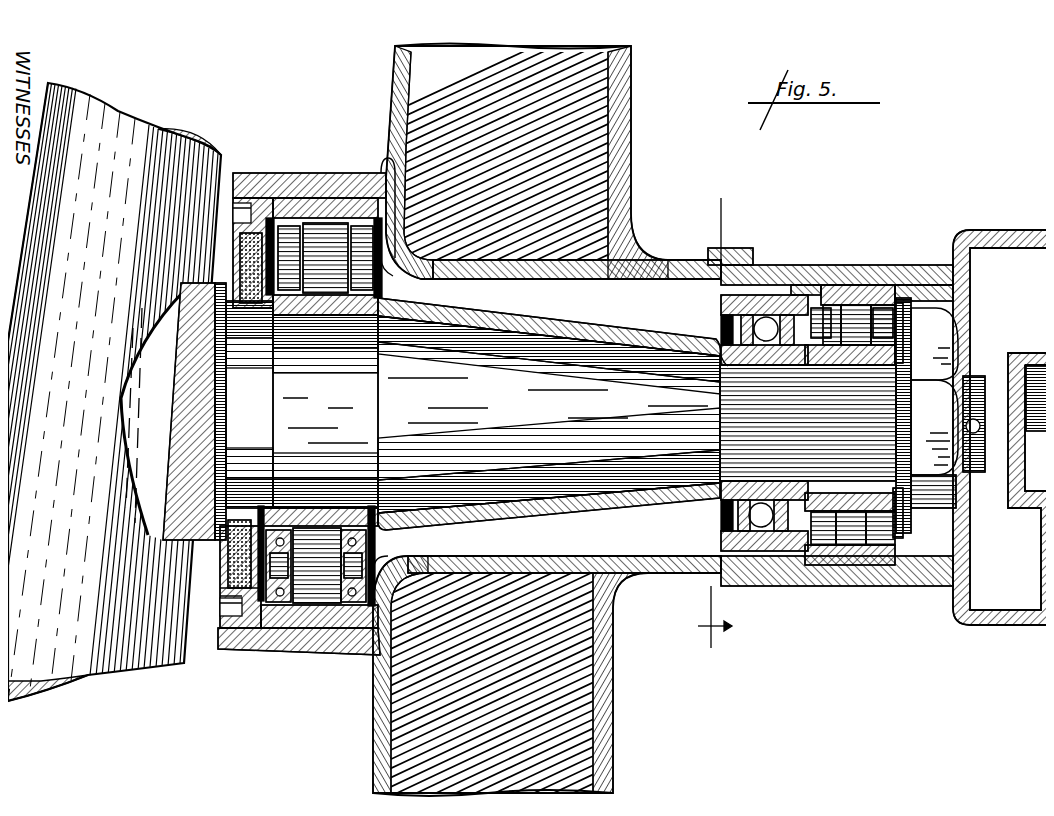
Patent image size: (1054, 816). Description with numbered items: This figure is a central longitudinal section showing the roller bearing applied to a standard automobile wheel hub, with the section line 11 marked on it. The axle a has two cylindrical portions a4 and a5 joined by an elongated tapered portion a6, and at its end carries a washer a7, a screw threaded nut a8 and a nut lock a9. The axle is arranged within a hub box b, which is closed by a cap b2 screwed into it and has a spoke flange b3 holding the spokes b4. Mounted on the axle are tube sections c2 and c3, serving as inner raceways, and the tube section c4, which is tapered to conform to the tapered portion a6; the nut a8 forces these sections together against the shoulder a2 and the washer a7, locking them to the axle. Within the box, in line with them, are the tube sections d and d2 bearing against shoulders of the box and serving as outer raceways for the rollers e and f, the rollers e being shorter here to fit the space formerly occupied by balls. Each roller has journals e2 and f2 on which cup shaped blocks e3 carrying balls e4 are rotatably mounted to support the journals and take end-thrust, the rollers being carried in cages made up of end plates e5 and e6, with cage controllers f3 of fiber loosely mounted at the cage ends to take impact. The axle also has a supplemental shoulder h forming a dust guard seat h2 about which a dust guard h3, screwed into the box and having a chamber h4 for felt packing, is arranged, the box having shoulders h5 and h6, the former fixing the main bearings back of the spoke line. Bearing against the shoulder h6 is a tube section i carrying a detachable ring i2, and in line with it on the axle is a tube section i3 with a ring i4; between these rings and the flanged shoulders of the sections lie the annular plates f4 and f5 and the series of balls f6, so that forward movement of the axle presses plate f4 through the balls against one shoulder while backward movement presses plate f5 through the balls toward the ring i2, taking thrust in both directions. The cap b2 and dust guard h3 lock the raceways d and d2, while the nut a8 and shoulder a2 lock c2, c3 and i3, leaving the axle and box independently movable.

The axle a is at (561, 407).
The shoulder a2 is at (260, 384).
The cylindrical portion a4 is at (325, 411).
The cylindrical portion a5 is at (808, 423).
The tapered portion a6 is at (549, 414).
The washer a7 is at (934, 408).
The screw threaded nut a8 is at (936, 441).
The nut lock a9 is at (985, 412).
The hub box b is at (660, 556).
The cap b2 is at (1022, 220).
The spoke flange b3 is at (624, 146).
The spokes b4 is at (578, 44).
The tube section c2 is at (338, 307).
The tube section c3 is at (888, 370).
The tube section c4 is at (543, 315).
The tube section d is at (318, 190).
The tube section d2 is at (880, 280).
The rollers e is at (320, 413).
The journals e2 is at (345, 560).
The cup shaped blocks e3 is at (355, 262).
The balls e4 is at (862, 558).
The end plate e5 is at (272, 210).
The end plate e6 is at (374, 286).
The rollers f is at (853, 425).
The journals f2 is at (898, 516).
The cage controllers f3 is at (370, 566).
The annular plate f4 is at (712, 350).
The annular plate f5 is at (795, 360).
The balls f6 is at (772, 360).
The supplemental shoulder h is at (214, 400).
The dust guard seat h2 is at (216, 376).
The dust guard h3 is at (214, 574).
The chamber h4 is at (220, 546).
The shoulder h5 is at (376, 156).
The shoulder h6 is at (790, 259).
The tube section i is at (745, 290).
The detachable ring i2 is at (712, 312).
The tube section i3 is at (748, 358).
The ring i4 is at (712, 326).
The section line 11 is at (718, 422).